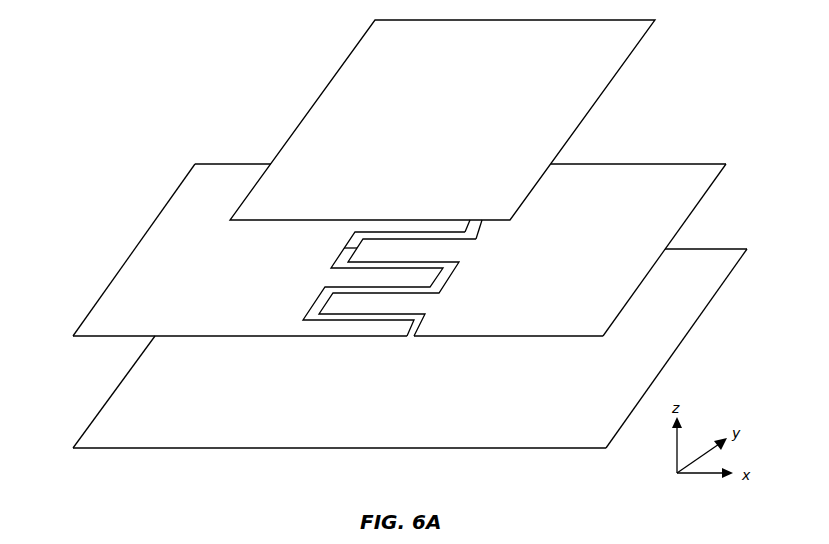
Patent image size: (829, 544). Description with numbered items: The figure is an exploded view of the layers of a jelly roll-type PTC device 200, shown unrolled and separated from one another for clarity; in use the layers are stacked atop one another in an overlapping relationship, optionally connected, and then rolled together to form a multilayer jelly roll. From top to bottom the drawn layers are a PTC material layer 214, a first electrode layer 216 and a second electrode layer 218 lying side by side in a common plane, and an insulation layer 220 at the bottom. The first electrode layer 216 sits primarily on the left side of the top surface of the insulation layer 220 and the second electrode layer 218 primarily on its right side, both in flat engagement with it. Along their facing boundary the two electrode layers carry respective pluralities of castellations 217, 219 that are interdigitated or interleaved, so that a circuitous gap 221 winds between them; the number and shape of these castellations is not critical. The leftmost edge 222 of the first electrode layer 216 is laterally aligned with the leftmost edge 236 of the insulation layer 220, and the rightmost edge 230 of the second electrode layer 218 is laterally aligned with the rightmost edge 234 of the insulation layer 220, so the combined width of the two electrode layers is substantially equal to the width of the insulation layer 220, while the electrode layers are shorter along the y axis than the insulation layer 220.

The jelly roll-type PTC device 200 is at (137, 65).
The PTC material layer 214 is at (442, 120).
The first electrode layer 216 is at (280, 250).
The castellations 217 is at (385, 328).
The second electrode layer 218 is at (529, 250).
The castellations 219 is at (380, 253).
The insulation layer 220 is at (411, 348).
The circuitous gap 221 is at (476, 237).
The leftmost edge of the first electrode layer 222 is at (140, 242).
The rightmost edge of the second electrode layer 230 is at (684, 222).
The rightmost edge of the insulation layer 234 is at (677, 347).
The leftmost edge of the insulation layer 236 is at (114, 393).